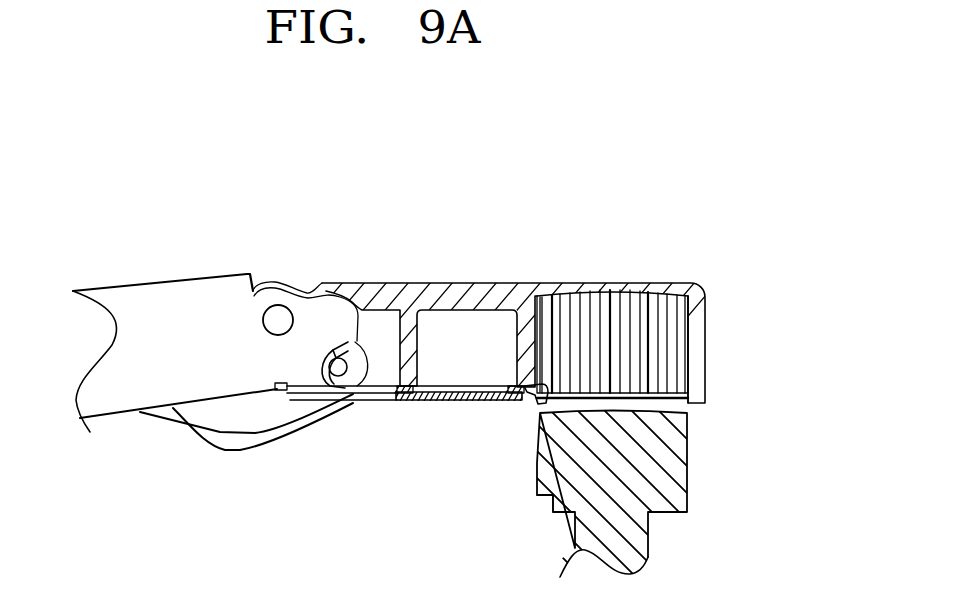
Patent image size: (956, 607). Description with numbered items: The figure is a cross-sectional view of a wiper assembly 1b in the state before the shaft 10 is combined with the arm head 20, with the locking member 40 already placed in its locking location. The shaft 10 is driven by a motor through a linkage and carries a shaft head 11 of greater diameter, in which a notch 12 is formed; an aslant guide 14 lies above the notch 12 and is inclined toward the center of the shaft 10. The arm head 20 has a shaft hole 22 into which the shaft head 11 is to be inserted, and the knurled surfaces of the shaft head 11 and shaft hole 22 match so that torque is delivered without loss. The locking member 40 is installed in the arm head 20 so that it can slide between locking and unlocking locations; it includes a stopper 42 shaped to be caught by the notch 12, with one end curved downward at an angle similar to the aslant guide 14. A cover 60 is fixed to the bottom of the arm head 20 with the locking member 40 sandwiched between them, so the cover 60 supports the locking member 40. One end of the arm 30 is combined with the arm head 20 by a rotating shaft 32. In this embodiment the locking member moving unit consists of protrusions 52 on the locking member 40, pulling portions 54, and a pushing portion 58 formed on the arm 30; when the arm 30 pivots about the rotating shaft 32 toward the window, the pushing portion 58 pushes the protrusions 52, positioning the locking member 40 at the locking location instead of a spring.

The wiper assembly 1b is at (466, 212).
The arm 30 is at (157, 282).
The rotating shaft 32 is at (282, 313).
The pulling portions 54 is at (346, 344).
The arm head 20 is at (540, 280).
The aslant guide 14 is at (548, 425).
The shaft hole 22 is at (681, 333).
The shaft head 11 is at (667, 479).
The shaft 10 is at (621, 495).
The notch 12 is at (538, 512).
The stopper 42 is at (540, 408).
The locking member 40 is at (352, 398).
The cover 60 is at (418, 395).
The protrusions 52 is at (340, 352).
The pushing portion 58 is at (270, 390).